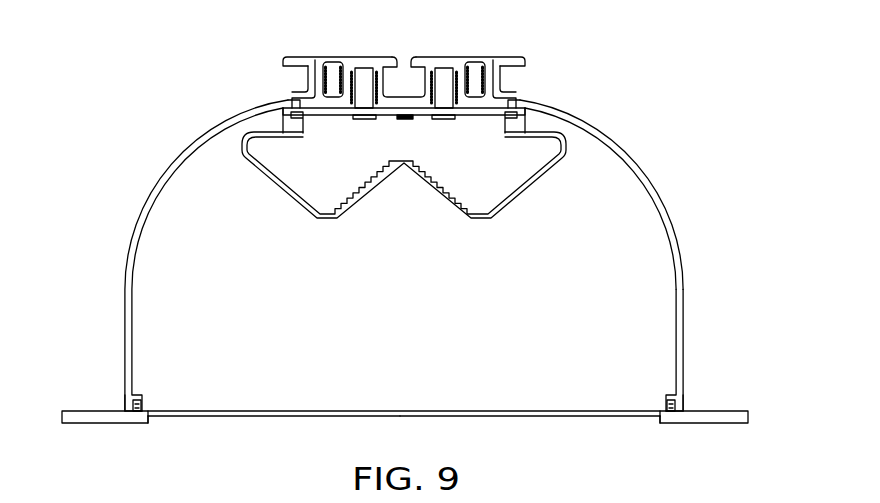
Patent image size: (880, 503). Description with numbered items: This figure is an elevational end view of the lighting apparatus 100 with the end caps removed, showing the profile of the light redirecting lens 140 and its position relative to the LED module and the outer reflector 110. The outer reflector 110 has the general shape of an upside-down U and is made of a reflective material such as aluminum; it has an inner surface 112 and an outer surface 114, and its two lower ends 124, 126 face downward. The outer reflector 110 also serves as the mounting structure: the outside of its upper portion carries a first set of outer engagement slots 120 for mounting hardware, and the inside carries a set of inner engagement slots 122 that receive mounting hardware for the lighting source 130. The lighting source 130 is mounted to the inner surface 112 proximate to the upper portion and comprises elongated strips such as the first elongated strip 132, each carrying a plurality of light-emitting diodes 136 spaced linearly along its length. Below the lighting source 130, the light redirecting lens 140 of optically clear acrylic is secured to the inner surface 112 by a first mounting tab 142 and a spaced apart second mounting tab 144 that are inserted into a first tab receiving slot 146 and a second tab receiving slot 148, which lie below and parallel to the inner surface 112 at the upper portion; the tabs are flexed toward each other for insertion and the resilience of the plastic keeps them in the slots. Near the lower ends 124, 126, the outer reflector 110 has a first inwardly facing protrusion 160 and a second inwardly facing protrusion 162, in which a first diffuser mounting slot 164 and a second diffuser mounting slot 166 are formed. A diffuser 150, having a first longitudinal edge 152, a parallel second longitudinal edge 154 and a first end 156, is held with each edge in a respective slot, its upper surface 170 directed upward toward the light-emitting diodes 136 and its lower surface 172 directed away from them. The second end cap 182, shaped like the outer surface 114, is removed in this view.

The lighting apparatus 100 is at (600, 118).
The outer reflector 110 is at (655, 188).
The inner surface 112 is at (677, 300).
The outer surface 114 is at (680, 256).
The outer engagement slots 120 is at (330, 62).
The inner engagement slots 122 is at (363, 70).
The second end cap 182 is at (407, 78).
The first tab receiving slot 146 is at (296, 102).
The second tab receiving slot 148 is at (512, 102).
The lighting source 130 is at (462, 117).
The first elongated strip 132 is at (355, 115).
The light-emitting diodes 136 is at (406, 119).
The first mounting tab 142 is at (305, 134).
The second mounting tab 144 is at (505, 134).
The light redirecting lens 140 is at (360, 200).
The diffuser 150 is at (222, 411).
The upper surface 170 is at (318, 411).
The lower surface 172 is at (470, 417).
The first end 156 is at (562, 417).
The first longitudinal edge 152 is at (127, 410).
The second longitudinal edge 154 is at (684, 410).
The first diffuser mounting slot 164 is at (143, 407).
The second diffuser mounting slot 166 is at (666, 407).
The first lower end 124 is at (132, 419).
The second lower end 126 is at (680, 419).
The first inwardly facing protrusion 160 is at (152, 417).
The second inwardly facing protrusion 162 is at (660, 417).